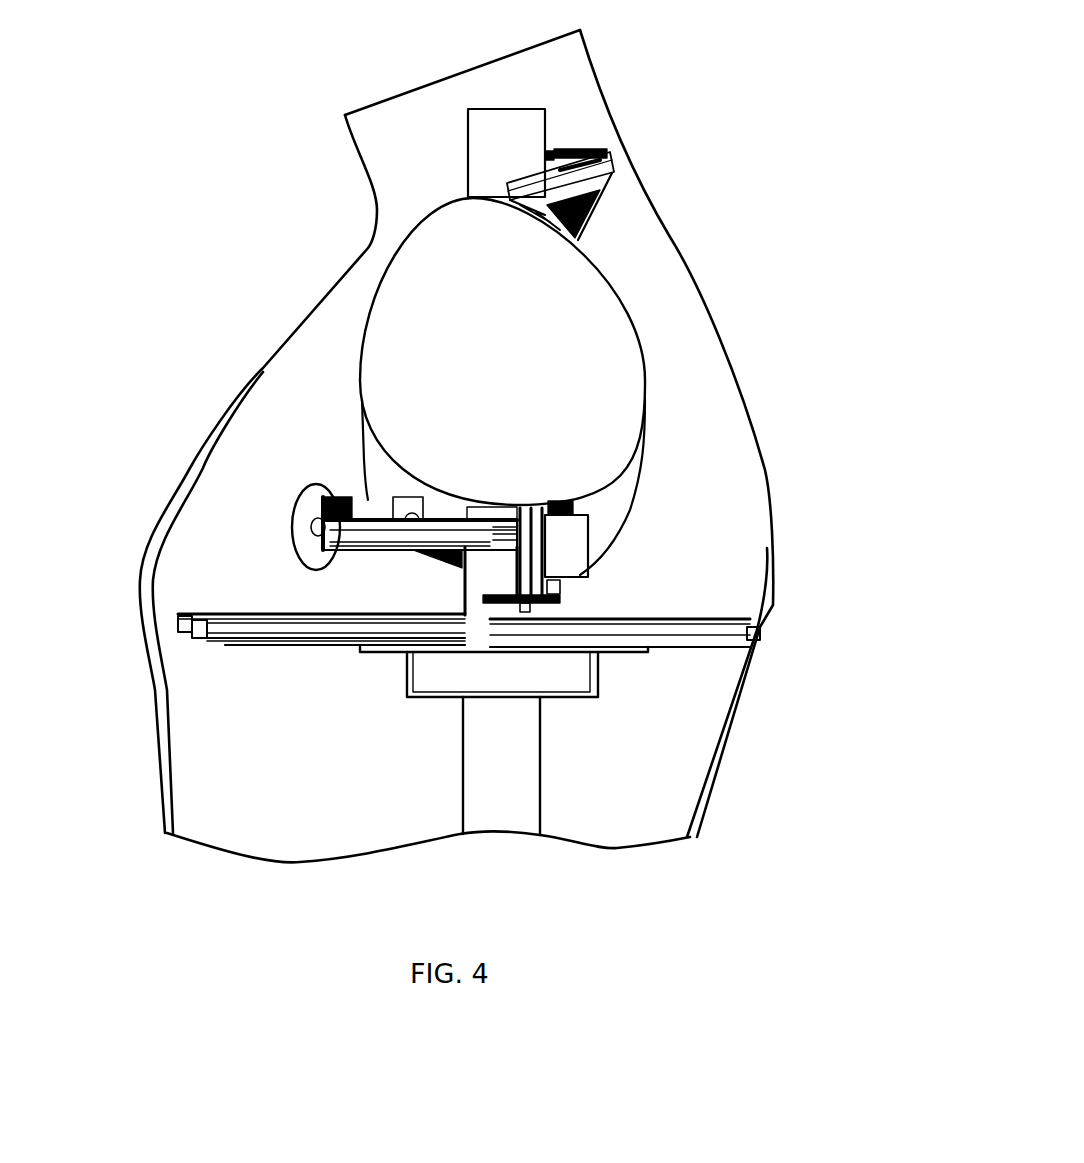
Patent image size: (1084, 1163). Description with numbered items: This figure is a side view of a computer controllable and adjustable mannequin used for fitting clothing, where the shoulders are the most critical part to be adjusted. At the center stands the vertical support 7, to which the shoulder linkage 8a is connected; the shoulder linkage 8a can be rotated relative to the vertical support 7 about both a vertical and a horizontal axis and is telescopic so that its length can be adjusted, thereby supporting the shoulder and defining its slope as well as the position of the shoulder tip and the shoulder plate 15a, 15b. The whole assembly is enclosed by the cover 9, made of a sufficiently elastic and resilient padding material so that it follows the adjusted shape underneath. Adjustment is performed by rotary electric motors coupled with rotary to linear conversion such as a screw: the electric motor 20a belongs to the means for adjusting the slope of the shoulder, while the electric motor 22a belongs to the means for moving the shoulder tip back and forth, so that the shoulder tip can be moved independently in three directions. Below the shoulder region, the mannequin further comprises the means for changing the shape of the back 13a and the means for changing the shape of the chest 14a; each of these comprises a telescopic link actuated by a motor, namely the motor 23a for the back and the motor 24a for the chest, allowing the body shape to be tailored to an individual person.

The vertical support 7 is at (497, 130).
The shoulder linkage 8a is at (600, 148).
The cover 9 is at (317, 303).
The shoulder plate 15a is at (605, 370).
The shoulder plate 15b is at (628, 490).
The electric motor 20a is at (560, 545).
The electric motor 22a is at (370, 505).
The motor 23a is at (538, 618).
The motor 24a is at (400, 613).
The means for changing the shape of chest 14a is at (257, 635).
The means for changing the shape of back 13a is at (650, 635).